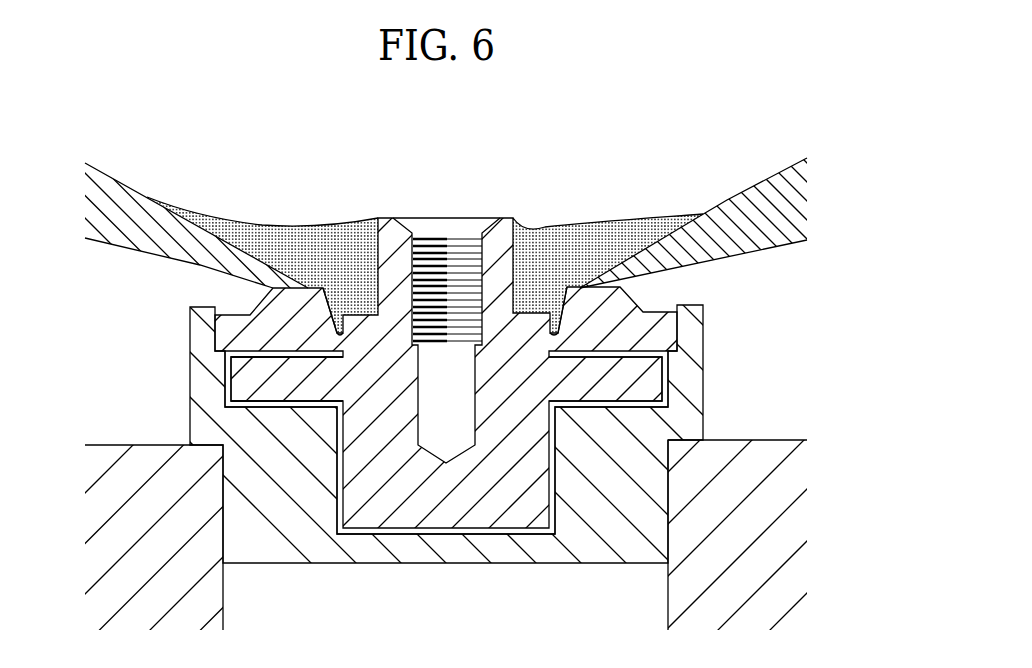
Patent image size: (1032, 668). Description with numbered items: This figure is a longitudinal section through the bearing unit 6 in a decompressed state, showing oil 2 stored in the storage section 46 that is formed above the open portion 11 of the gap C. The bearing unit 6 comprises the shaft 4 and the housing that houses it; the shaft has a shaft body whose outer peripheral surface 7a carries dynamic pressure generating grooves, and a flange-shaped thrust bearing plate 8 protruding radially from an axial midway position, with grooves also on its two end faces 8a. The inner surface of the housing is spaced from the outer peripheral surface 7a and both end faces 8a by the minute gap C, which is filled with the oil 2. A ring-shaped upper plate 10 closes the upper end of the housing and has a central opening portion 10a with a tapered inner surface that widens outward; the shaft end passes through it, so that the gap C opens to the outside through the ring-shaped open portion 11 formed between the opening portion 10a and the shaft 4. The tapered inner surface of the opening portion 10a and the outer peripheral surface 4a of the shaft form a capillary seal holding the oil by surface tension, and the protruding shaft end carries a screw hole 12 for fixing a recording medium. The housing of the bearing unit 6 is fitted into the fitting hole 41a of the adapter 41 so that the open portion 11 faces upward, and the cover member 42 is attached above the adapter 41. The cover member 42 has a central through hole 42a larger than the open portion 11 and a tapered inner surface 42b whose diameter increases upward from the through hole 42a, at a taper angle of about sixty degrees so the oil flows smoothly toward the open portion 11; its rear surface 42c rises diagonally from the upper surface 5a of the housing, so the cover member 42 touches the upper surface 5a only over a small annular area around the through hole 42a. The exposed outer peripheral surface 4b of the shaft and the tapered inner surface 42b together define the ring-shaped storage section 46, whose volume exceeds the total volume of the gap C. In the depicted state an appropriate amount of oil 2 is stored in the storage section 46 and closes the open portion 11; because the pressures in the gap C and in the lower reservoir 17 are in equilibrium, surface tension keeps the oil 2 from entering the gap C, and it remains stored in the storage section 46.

The oil 2 is at (251, 219).
The shaft 4 is at (430, 520).
The outer peripheral surface of the shaft 4a is at (343, 355).
The outer peripheral surface of the exposed shaft 4b is at (535, 222).
The upper surface of the housing 5a is at (337, 336).
The bearing unit 6 is at (744, 346).
The outer peripheral surface of the shaft body 7a is at (552, 508).
The thrust bearing plate 8 is at (647, 378).
The end faces of the thrust bearing plate 8a is at (255, 358).
The upper plate 10 is at (272, 289).
The opening portion 10a is at (561, 288).
The open portion 11 is at (553, 282).
The screw hole 12 is at (417, 247).
The lower reservoir 17 is at (704, 130).
The adapter 41 is at (781, 455).
The fitting hole 41a is at (667, 592).
The cover member 42 is at (753, 196).
The through hole 42a is at (579, 285).
The tapered inner surface 42b is at (648, 250).
The rear surface 42c is at (749, 252).
The storage section 46 is at (224, 207).
The gap C is at (343, 506).